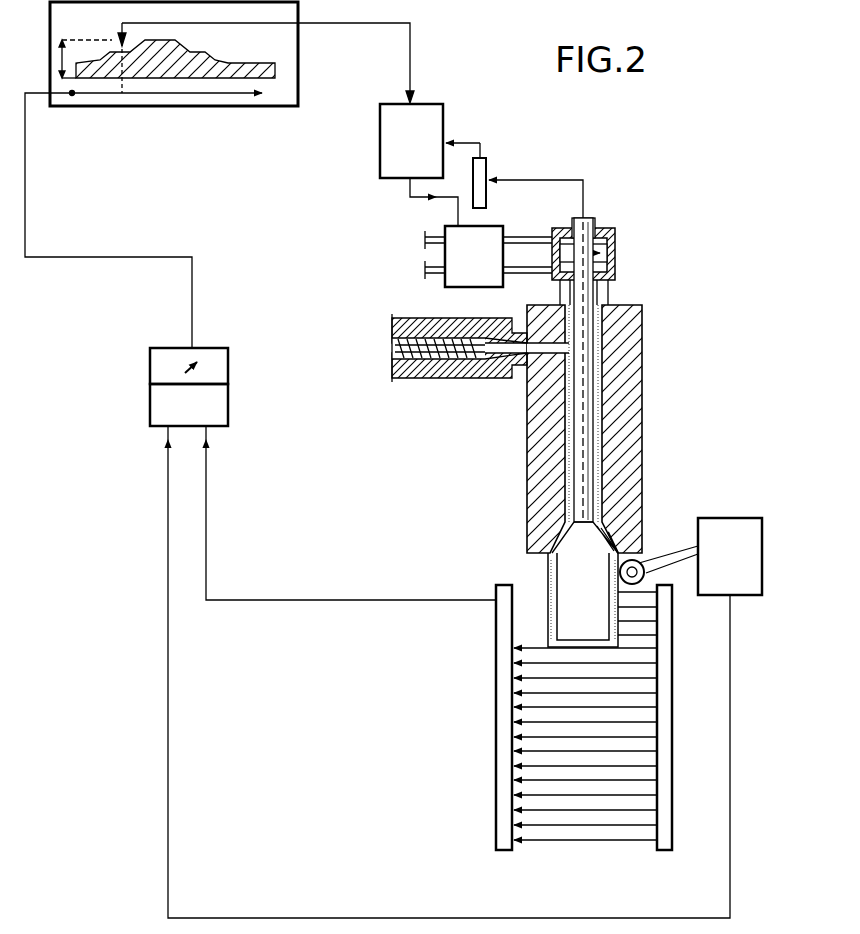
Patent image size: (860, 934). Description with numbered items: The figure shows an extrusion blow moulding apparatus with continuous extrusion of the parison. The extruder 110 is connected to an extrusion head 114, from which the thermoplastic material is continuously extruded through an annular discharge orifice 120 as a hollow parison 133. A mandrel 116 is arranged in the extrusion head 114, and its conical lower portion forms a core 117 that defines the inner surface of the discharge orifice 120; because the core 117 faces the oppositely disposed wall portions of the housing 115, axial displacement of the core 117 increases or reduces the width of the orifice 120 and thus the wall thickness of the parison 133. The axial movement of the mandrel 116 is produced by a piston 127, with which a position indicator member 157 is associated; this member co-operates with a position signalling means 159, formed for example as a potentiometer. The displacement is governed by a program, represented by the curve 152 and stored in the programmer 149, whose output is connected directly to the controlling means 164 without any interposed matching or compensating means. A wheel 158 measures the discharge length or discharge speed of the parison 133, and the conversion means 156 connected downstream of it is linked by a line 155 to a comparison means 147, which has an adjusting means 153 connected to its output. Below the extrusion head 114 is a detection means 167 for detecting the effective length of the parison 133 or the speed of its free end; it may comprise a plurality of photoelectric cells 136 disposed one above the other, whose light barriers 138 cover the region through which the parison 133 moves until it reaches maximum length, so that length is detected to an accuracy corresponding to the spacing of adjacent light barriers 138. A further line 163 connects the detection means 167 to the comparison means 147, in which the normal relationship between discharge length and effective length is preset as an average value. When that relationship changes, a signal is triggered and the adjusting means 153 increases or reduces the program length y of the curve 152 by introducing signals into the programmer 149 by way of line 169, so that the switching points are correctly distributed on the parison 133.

The extruder 110 is at (438, 370).
The extrusion head 114 is at (624, 429).
The housing 115 is at (630, 458).
The mandrel 116 is at (583, 415).
The core 117 is at (548, 520).
The discharge orifice 120 is at (615, 540).
The piston 127 is at (612, 256).
The parison 133 is at (548, 580).
The photoelectric cells 136 is at (667, 684).
The light barriers 138 is at (595, 695).
The comparison means 147 is at (230, 406).
The programmer 149 is at (211, 106).
The curve 152 is at (212, 55).
The adjusting means 153 is at (229, 364).
The line 155 is at (168, 732).
The conversion means 156 is at (750, 525).
The position indicator member 157 is at (553, 180).
The wheel 158 is at (652, 565).
The position signalling means 159 is at (483, 170).
The line 163 is at (342, 599).
The controlling means 164 is at (427, 113).
The detection means 167 is at (567, 735).
The line 169 is at (130, 257).